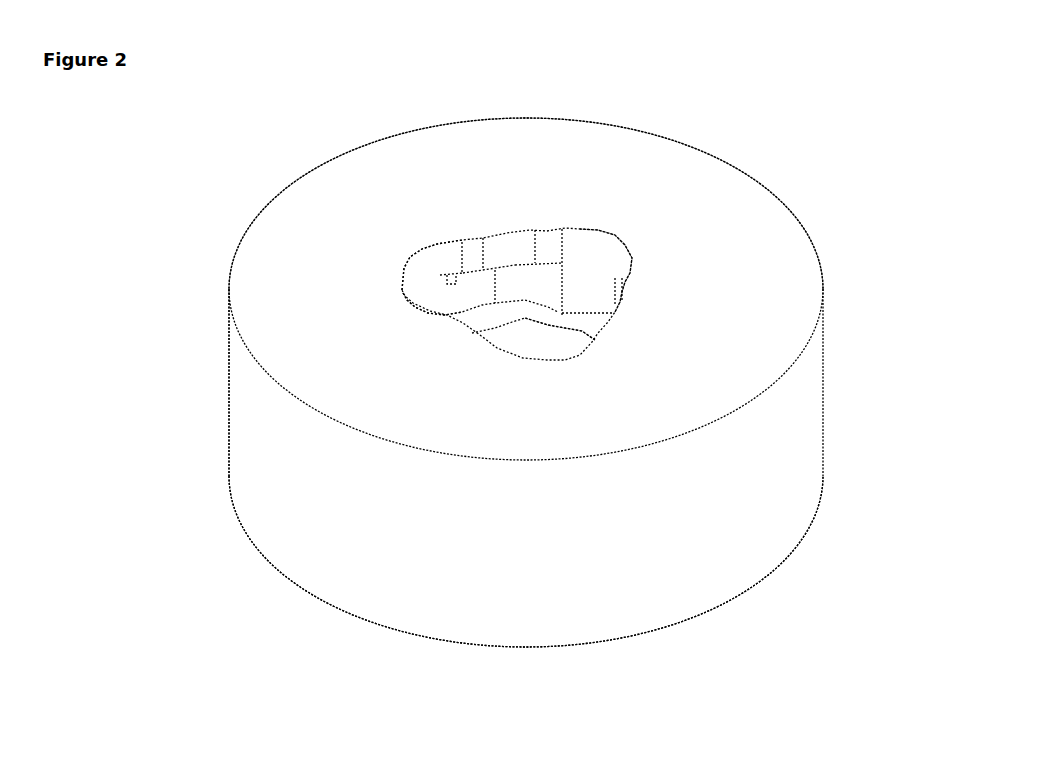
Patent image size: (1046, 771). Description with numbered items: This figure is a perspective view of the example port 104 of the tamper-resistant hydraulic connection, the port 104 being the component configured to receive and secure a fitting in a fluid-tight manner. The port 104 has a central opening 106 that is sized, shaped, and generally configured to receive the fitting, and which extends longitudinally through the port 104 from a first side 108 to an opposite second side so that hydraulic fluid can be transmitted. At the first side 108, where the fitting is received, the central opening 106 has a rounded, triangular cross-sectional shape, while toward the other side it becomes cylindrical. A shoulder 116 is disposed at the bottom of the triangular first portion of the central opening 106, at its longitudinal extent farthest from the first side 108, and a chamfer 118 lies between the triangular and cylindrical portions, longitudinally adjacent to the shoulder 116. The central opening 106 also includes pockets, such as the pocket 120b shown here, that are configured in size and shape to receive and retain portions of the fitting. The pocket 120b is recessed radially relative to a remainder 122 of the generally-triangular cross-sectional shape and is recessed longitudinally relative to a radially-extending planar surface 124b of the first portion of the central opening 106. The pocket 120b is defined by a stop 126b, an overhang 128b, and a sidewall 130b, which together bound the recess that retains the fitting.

The port 104 is at (912, 149).
The central opening 106 is at (513, 190).
The first side 108 is at (313, 247).
The shoulder 116 is at (493, 317).
The chamfer 118 is at (535, 325).
The pocket 120b is at (528, 286).
The remainder of the generally-triangular cross-sectional shape 122 is at (599, 255).
The radially-extending planar surface 124b is at (431, 288).
The stop 126b is at (450, 279).
The overhang 128b is at (489, 258).
The sidewall 130b is at (547, 290).